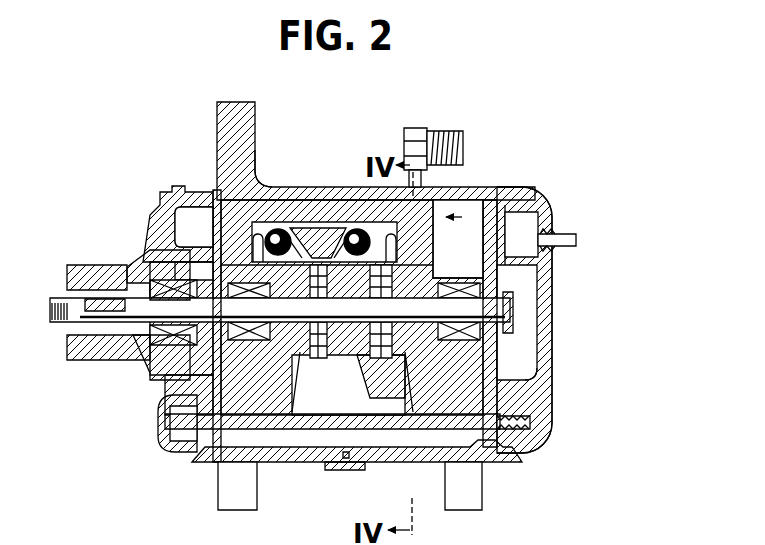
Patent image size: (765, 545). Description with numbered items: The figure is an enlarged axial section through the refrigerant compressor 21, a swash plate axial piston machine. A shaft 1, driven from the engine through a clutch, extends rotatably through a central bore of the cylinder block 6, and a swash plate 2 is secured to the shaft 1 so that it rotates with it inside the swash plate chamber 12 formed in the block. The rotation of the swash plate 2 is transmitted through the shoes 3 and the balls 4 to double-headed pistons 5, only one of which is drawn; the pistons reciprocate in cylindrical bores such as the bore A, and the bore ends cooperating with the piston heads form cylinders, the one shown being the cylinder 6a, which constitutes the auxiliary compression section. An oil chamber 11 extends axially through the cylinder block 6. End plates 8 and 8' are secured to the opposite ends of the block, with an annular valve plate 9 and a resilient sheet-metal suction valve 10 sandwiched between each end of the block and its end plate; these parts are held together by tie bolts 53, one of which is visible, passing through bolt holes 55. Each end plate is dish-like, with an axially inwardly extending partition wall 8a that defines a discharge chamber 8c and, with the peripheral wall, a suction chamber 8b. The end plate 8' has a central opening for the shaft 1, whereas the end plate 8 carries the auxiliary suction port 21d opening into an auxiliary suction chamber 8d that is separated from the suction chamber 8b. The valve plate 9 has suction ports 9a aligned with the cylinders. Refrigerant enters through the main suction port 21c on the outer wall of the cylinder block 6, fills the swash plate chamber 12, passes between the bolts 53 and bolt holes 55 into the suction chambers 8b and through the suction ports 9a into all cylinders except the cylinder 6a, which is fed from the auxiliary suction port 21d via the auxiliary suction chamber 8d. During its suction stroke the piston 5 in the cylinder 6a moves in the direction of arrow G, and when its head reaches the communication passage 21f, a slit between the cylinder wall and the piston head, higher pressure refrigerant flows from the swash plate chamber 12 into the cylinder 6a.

The shaft 1 is at (103, 323).
The swash plate 2 is at (332, 362).
The shoes 3 is at (333, 232).
The balls 4 is at (360, 225).
The double-headed piston 5 is at (421, 210).
The cylinder block 6 is at (400, 450).
The cylinder 6a is at (481, 215).
The end plate 8 is at (387, 305).
The end plate 8' is at (141, 328).
The partition wall 8a is at (528, 374).
The suction chamber 8b is at (177, 196).
The discharge chamber 8c is at (548, 332).
The auxiliary suction chamber 8d is at (527, 215).
The valve plate 9 is at (221, 352).
The suction port 9a is at (183, 231).
The suction valve 10 is at (220, 192).
The oil chamber 11 is at (374, 443).
The swash plate chamber 12 is at (255, 240).
The refrigerant compressor 21 is at (580, 405).
The main suction port 21c is at (466, 145).
The auxiliary suction port 21d is at (577, 243).
The communication passage 21f is at (437, 282).
The tie bolt 53 is at (165, 428).
The bolt hole 55 is at (215, 457).
The cylindrical bore A is at (308, 228).
The arrow G is at (460, 214).